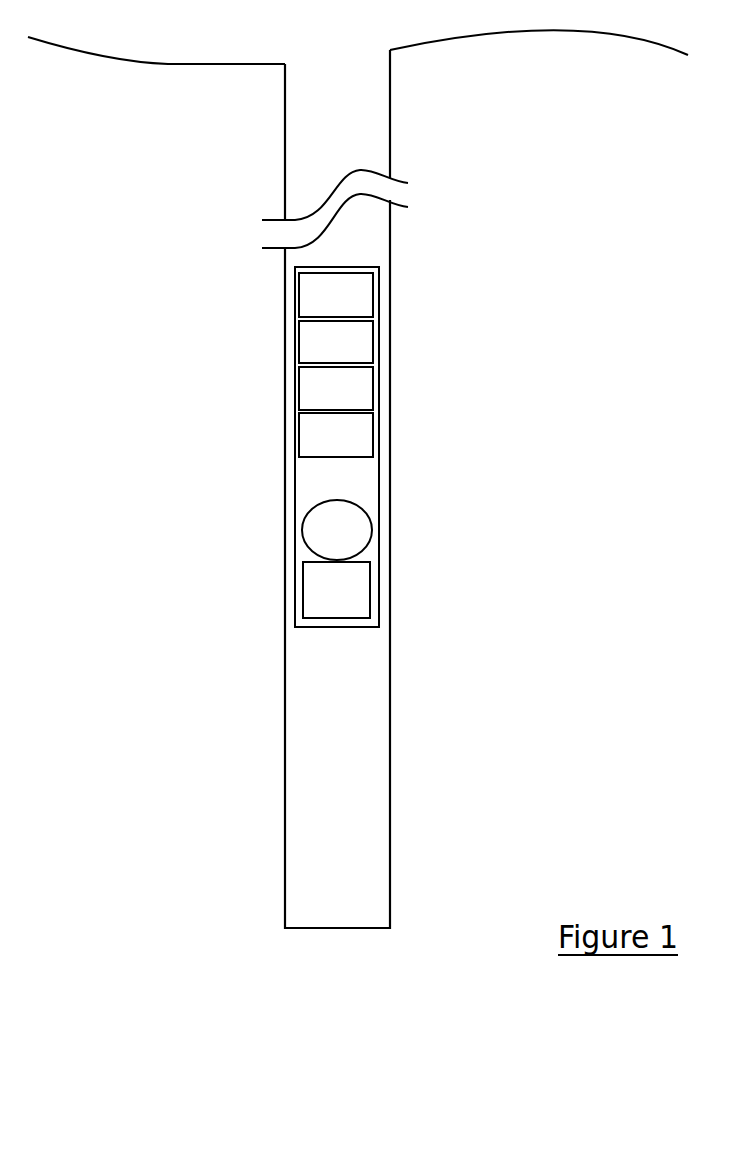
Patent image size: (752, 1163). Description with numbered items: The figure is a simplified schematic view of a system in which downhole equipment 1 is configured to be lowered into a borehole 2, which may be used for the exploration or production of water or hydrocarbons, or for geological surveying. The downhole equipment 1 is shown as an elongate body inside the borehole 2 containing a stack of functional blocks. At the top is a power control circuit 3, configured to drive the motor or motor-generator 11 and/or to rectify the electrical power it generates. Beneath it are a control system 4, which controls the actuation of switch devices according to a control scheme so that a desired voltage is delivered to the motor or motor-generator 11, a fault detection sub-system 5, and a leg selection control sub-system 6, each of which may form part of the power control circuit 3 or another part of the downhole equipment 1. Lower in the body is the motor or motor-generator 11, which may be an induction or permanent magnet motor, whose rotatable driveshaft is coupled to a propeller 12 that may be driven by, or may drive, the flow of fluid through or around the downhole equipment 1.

The downhole equipment 1 is at (308, 483).
The borehole 2 is at (342, 727).
The power control circuit 3 is at (325, 312).
The control system 4 is at (325, 358).
The fault detection sub-system 5 is at (325, 403).
The leg selection control sub-system 6 is at (325, 449).
The motor or motor-generator 11 is at (315, 542).
The propeller 12 is at (355, 605).